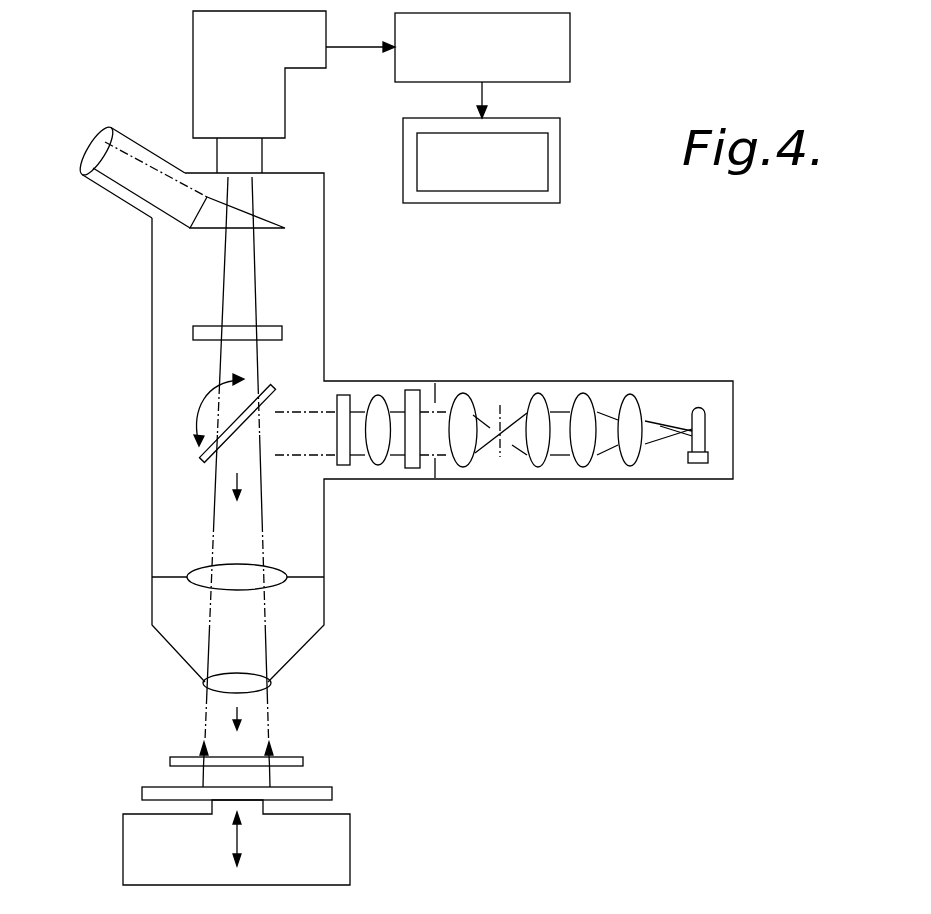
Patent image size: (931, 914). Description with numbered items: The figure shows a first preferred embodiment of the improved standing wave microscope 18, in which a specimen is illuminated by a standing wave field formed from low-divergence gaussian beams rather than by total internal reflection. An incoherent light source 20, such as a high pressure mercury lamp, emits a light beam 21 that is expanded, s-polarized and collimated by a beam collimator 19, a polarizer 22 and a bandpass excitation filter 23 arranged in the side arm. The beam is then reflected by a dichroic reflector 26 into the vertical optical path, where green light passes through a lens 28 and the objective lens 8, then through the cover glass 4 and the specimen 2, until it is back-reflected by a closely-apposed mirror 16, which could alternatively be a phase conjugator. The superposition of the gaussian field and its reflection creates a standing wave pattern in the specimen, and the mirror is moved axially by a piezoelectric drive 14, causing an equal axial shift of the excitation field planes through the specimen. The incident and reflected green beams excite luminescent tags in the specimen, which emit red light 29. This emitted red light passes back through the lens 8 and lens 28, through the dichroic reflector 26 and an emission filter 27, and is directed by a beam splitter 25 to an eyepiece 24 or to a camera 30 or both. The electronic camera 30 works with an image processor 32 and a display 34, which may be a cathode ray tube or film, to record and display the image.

The specimen 2 is at (252, 778).
The cover glass 4 is at (293, 757).
The lens 8 is at (230, 681).
The piezoelectric drive 14 is at (305, 870).
The mirror 16 is at (330, 795).
The microscope 18 is at (152, 278).
The beam collimator 19 is at (626, 393).
The light source 20 is at (705, 420).
The light beam 21 is at (603, 453).
The polarizer 22 is at (443, 383).
The bandpass excitation filter 23 is at (343, 462).
The eyepiece 24 is at (90, 143).
The beam splitter 25 is at (263, 213).
The dichroic reflector 26 is at (273, 383).
The emission filter 27 is at (193, 330).
The lens 28 is at (203, 568).
The red light 29 is at (250, 283).
The camera 30 is at (195, 50).
The image processor 32 is at (560, 45).
The display 34 is at (482, 199).